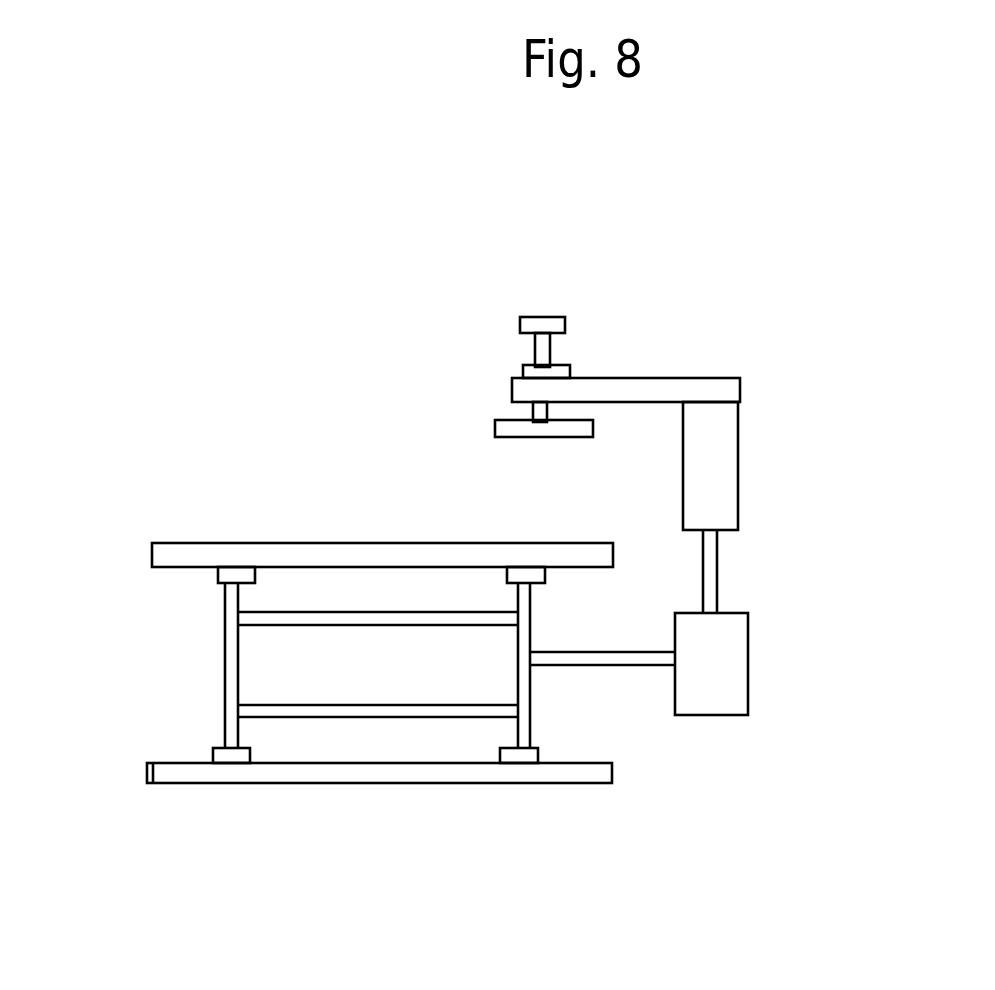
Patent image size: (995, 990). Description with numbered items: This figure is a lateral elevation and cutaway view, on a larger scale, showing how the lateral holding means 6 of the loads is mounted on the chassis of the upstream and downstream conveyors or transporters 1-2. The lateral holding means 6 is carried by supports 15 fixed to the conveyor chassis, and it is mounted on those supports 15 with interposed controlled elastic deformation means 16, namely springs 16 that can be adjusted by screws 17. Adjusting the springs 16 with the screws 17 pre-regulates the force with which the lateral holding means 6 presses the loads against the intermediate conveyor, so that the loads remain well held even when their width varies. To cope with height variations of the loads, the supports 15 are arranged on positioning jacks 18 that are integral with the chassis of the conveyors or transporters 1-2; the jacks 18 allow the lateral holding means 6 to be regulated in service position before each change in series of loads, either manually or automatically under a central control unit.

The upstream and downstream conveyors or transporters 1-2 is at (172, 603).
The lateral holding means 6 is at (497, 423).
The supports 15 is at (715, 468).
The controlled elastic deformation means 16 is at (540, 412).
The screws 17 is at (547, 317).
The positioning jacks 18 is at (725, 665).